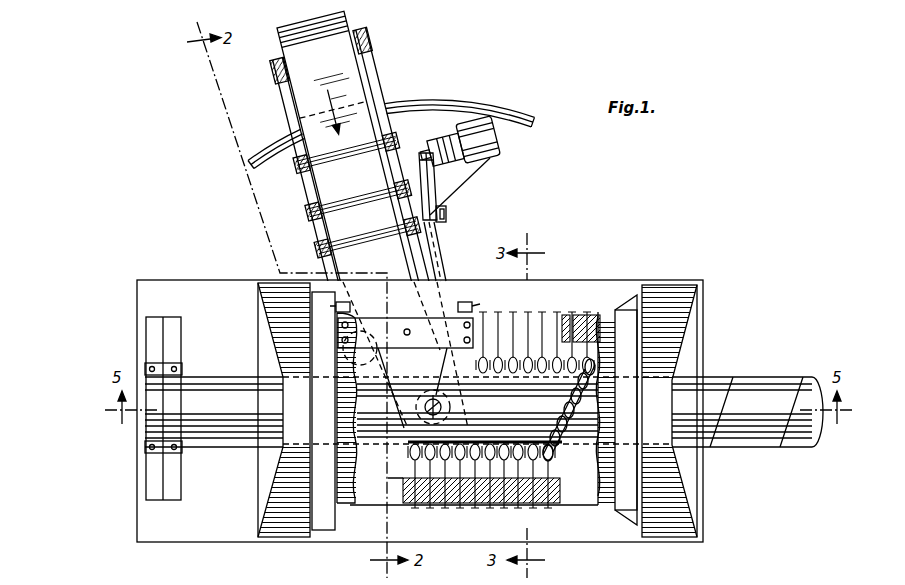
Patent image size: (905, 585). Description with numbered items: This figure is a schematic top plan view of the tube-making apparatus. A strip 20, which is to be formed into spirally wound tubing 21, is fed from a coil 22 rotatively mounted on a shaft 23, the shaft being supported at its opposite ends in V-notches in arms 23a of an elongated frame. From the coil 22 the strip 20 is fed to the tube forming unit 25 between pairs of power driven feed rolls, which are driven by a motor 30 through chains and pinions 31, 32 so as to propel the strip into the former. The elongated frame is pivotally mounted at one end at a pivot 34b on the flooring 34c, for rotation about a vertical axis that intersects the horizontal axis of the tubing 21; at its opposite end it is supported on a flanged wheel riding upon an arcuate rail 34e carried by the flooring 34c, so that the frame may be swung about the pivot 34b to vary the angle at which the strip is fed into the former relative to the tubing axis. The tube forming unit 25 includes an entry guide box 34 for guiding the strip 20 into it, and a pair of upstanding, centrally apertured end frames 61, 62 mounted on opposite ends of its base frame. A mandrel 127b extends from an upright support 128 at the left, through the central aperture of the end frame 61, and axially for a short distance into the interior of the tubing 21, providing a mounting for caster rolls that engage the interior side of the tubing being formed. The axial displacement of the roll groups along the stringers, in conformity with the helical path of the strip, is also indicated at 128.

The strip 20 is at (370, 123).
The spirally wound tubing 21 is at (752, 374).
The coil 22 is at (345, 21).
The shaft 23 is at (372, 48).
The arms 23a is at (387, 73).
The tube forming unit 25 is at (598, 267).
The motor 30 is at (493, 150).
The chains and pinions 31 is at (433, 195).
The chains and pinions 32 is at (440, 230).
The entry guide box 34 is at (447, 273).
The pivot 34b is at (416, 410).
The flooring 34c is at (578, 534).
The arcuate rail 34e is at (481, 105).
The end frame 61 is at (290, 536).
The end frame 62 is at (669, 531).
The mandrel 127b is at (207, 383).
The upright support 128 is at (172, 340).